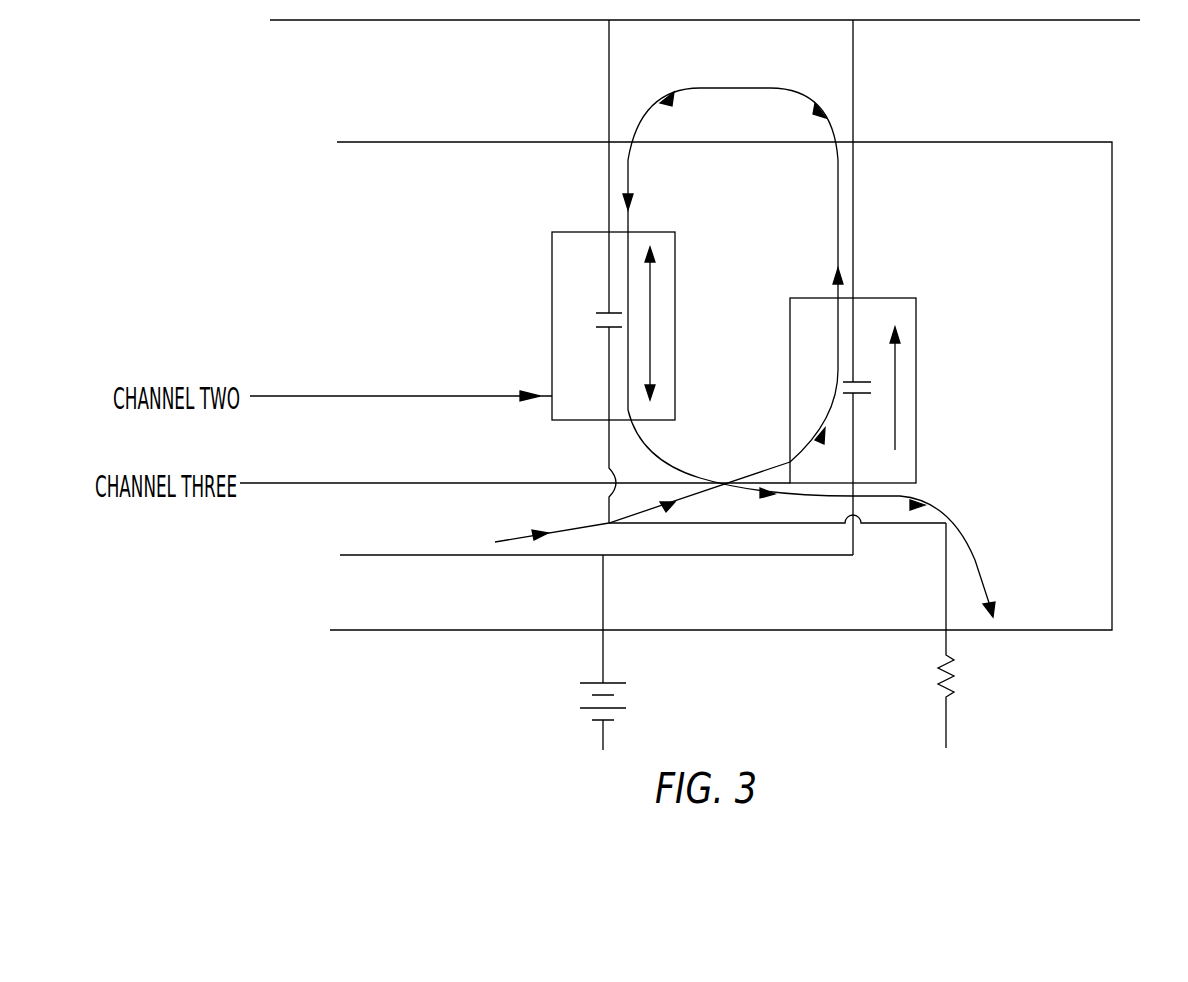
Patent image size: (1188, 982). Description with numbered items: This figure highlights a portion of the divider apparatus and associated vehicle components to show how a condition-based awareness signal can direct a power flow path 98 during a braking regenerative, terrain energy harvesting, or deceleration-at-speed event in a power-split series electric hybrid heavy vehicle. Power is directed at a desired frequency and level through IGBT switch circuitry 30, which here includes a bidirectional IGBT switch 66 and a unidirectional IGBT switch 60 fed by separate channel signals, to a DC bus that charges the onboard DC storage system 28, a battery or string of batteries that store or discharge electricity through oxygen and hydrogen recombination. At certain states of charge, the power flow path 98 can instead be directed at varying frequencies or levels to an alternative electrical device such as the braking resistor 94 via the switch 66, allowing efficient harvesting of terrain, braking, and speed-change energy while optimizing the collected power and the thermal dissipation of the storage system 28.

The IGBT switch circuitry 30 is at (721, 359).
The switch 66 is at (675, 270).
The unidirectional IGBT switch 60 is at (916, 330).
The power flow path 98 is at (752, 88).
The DC storage system 28 is at (585, 705).
The braking resistor 94 is at (935, 675).